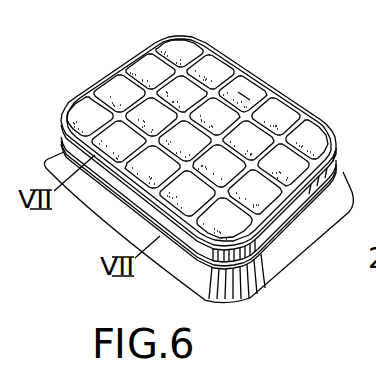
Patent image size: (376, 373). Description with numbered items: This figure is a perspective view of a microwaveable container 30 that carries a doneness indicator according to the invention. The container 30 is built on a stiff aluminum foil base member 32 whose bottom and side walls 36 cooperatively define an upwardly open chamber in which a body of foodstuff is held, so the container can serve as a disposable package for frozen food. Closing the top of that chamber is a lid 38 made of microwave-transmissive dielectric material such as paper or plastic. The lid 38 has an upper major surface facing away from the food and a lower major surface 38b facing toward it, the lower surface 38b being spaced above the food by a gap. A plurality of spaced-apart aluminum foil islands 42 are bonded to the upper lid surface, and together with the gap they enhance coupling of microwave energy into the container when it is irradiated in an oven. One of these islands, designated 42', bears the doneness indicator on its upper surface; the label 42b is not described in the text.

The microwaveable container 30 is at (207, 162).
The foil base member 32 is at (170, 272).
The side walls 36 is at (110, 222).
The lid 38 is at (333, 119).
The metal foil islands 42 is at (197, 125).
The island bearing the doneness indicator 42' is at (271, 73).
The partition wall 42b is at (351, 306).
The lower major surface of the lid 38b is at (359, 352).